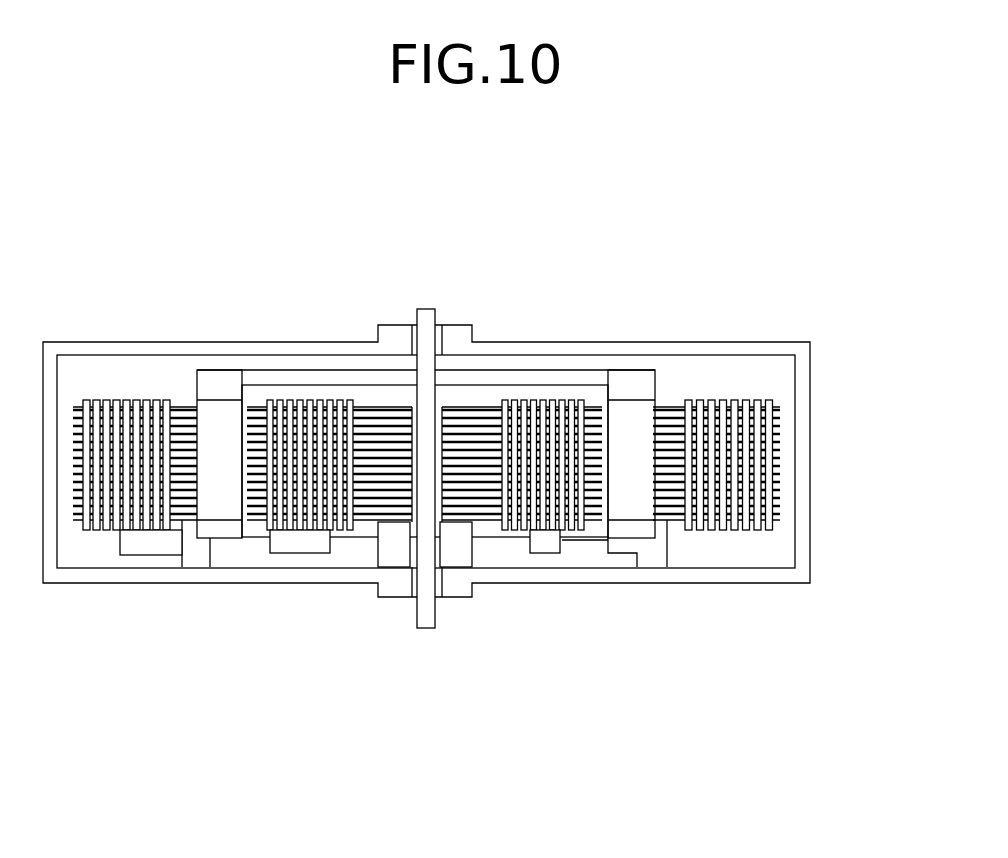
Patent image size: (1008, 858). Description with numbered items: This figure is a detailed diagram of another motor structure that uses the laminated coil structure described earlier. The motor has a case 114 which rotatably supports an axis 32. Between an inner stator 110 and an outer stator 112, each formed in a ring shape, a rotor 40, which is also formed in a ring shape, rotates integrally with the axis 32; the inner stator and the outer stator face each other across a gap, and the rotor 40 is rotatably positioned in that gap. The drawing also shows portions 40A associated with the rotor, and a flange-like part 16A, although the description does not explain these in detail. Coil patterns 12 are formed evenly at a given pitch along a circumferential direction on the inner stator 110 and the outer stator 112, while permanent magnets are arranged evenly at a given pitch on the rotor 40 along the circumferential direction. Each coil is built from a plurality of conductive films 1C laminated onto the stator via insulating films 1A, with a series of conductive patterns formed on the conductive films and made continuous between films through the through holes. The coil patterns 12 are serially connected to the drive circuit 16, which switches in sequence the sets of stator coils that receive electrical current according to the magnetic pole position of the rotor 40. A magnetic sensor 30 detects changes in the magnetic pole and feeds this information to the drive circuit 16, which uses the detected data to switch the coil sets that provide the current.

The case 114 is at (803, 463).
The rotor 40 is at (578, 383).
The frame side wall 40A is at (220, 410).
The coil patterns 12 is at (307, 403).
The conductive films 1C is at (452, 410).
The insulating films 1A is at (473, 410).
The drive circuit 16 is at (302, 542).
The bobbin flange 16A is at (392, 558).
The magnetic sensor 30 is at (543, 553).
The inner stator 110 is at (575, 540).
The outer stator 112 is at (702, 532).
The axis 32 is at (426, 625).